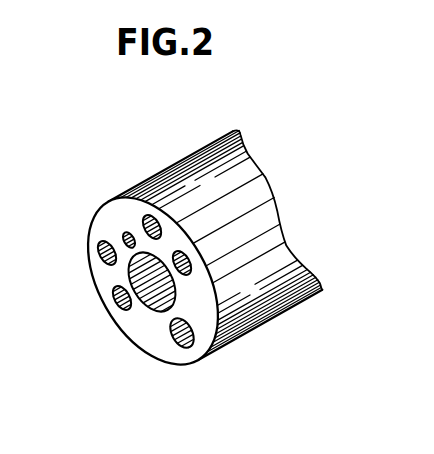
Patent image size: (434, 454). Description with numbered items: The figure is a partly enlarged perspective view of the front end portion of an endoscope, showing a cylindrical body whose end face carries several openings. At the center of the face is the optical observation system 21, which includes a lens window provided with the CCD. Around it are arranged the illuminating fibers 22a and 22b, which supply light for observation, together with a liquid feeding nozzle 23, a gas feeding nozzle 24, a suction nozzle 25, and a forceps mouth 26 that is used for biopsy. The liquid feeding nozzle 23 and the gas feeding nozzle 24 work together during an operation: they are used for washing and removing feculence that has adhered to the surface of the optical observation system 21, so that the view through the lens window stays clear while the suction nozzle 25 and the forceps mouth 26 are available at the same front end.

The optical observation system 21 is at (153, 298).
The illuminating fiber 22a is at (111, 304).
The illuminating fiber 22b is at (190, 264).
The liquid feeding nozzle 23 is at (100, 257).
The gas feeding nozzle 24 is at (125, 233).
The suction nozzle 25 is at (159, 226).
The forceps mouth 26 is at (184, 337).